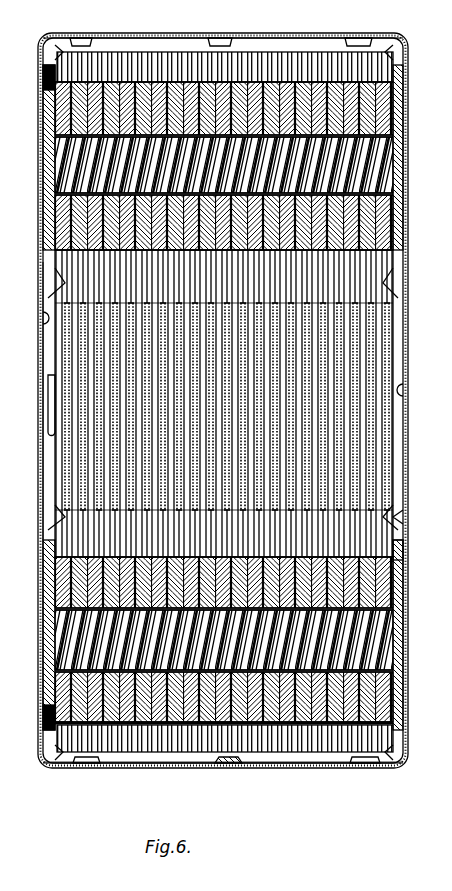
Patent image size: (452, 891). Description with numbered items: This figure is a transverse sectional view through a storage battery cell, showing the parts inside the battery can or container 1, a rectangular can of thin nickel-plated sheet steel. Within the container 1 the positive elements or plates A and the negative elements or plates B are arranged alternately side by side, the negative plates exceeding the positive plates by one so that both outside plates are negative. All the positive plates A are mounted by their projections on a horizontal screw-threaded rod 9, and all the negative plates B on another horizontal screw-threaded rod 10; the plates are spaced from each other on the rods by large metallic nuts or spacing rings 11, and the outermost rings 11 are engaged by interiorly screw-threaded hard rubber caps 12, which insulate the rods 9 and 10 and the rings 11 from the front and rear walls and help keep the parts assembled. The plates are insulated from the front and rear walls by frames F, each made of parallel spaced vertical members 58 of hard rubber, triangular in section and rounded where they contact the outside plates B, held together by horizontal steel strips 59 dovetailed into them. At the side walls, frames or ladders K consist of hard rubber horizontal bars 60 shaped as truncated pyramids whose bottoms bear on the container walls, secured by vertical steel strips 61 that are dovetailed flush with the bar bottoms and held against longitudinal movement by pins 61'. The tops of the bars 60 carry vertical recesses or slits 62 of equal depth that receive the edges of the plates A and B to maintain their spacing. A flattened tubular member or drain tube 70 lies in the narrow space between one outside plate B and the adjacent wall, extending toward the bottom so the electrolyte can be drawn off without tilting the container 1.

The battery can or container 1 is at (328, 768).
The horizontal screw-threaded rod 9 is at (403, 180).
The horizontal screw-threaded rod 10 is at (400, 655).
The spacing rings 11 is at (395, 222).
The hard rubber caps 12 is at (404, 72).
The vertical members 58 is at (62, 50).
The horizontal steel strips 59 is at (43, 318).
The horizontal bars 60 is at (292, 40).
The vertical steel strips 61 is at (233, 409).
The pins 61' is at (215, 781).
The vertical recesses or slits 62 is at (150, 40).
The tubular member or drain tube 70 is at (48, 395).
The positive elements or plates A is at (385, 548).
The negative elements or plates B is at (54, 338).
The frames F is at (404, 322).
The frames or ladders K is at (160, 766).